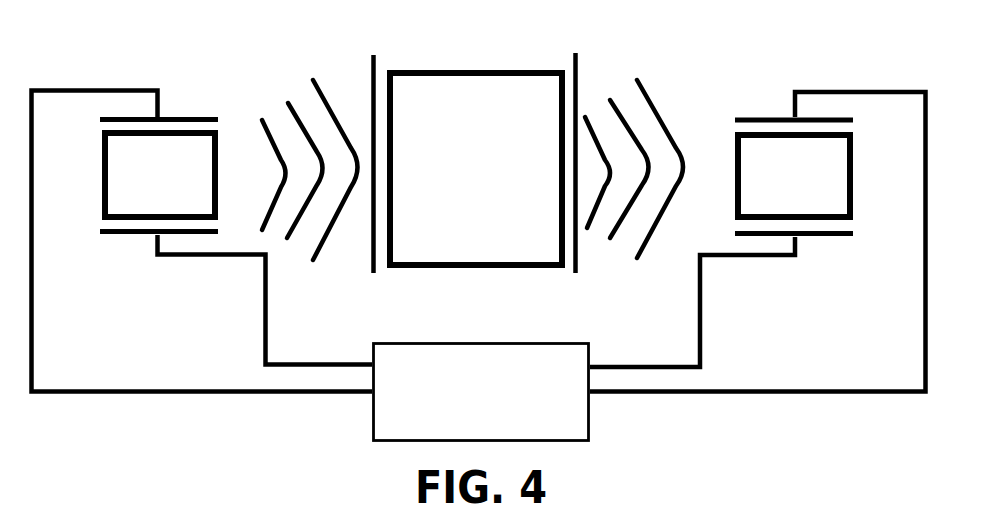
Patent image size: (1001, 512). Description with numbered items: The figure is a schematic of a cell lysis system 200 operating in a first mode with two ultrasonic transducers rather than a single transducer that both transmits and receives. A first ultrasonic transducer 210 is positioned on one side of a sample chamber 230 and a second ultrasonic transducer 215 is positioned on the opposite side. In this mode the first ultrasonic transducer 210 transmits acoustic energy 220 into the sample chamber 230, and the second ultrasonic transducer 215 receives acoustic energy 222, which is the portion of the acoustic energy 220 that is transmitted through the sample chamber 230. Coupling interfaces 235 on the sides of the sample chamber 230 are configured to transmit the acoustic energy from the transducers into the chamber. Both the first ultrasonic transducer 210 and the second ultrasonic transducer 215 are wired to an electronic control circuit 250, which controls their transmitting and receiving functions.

The cell lysis system 200 is at (703, 78).
The first ultrasonic transducer 210 is at (102, 192).
The second ultrasonic transducer 215 is at (853, 195).
The acoustic energy 220 is at (295, 73).
The acoustic energy 222 is at (627, 73).
The sample chamber 230 is at (463, 267).
The coupling interfaces 235 is at (377, 63).
The electronic control circuit 250 is at (372, 350).